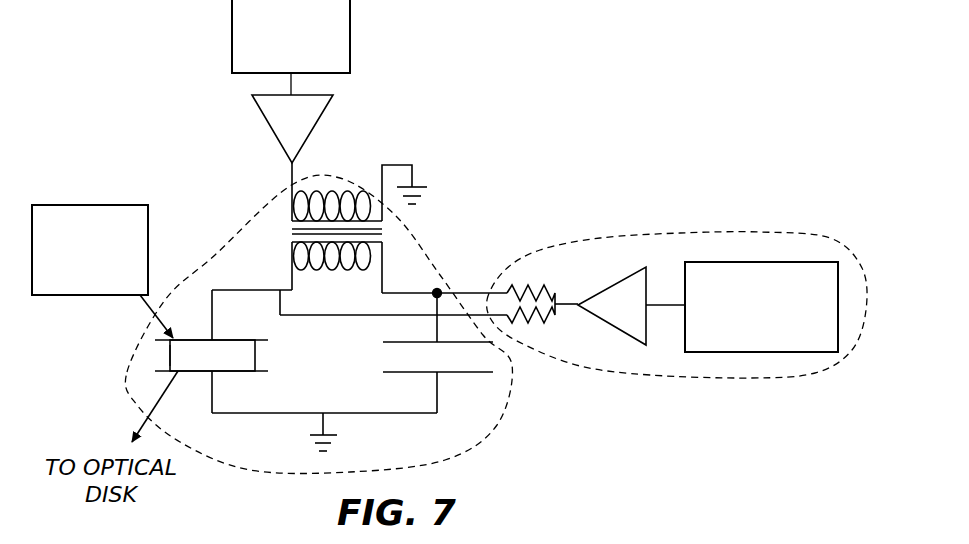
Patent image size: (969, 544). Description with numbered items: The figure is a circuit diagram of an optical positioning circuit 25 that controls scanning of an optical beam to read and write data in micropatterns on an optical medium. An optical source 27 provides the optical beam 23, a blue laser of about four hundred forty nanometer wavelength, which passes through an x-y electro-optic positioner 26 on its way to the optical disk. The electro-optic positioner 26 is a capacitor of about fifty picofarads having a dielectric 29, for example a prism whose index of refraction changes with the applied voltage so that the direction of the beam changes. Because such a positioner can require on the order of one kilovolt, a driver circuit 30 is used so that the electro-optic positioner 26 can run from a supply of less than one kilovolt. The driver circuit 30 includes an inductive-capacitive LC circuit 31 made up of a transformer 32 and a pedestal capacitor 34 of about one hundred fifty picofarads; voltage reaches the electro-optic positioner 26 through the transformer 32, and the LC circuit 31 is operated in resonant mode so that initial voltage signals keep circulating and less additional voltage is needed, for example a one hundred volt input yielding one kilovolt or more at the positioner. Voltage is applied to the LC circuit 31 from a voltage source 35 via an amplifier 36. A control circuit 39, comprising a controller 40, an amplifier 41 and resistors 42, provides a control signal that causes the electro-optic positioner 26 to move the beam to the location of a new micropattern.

The optical beam 23 is at (157, 312).
The optical positioning circuit 25 is at (150, 112).
The x-y electro-optic positioner 26 is at (245, 340).
The optical source 27 is at (82, 284).
The dielectric 29 is at (238, 360).
The driver circuit 30 is at (445, 188).
The inductive-capacitive (LC) circuit 31 is at (466, 430).
The transformer 32 is at (328, 184).
The pedestal capacitor 34 is at (398, 357).
The voltage source 35 is at (350, 25).
The amplifier 36 is at (268, 125).
The control circuit 39 is at (663, 353).
The controller 40 is at (752, 262).
The amplifier 41 is at (619, 280).
The resistors 42 is at (537, 293).